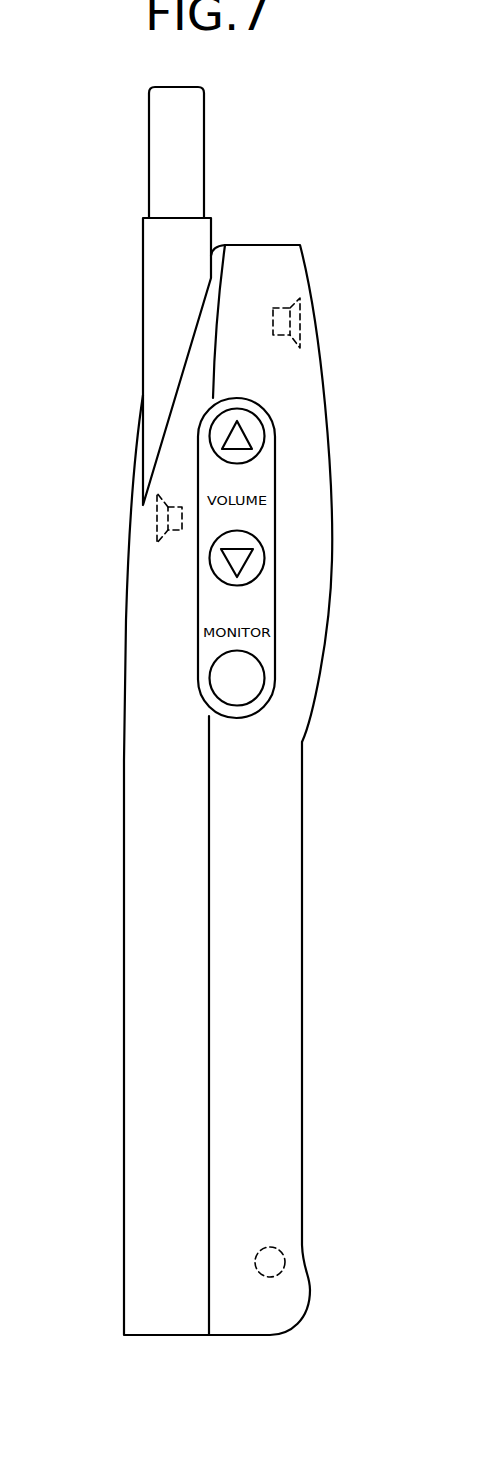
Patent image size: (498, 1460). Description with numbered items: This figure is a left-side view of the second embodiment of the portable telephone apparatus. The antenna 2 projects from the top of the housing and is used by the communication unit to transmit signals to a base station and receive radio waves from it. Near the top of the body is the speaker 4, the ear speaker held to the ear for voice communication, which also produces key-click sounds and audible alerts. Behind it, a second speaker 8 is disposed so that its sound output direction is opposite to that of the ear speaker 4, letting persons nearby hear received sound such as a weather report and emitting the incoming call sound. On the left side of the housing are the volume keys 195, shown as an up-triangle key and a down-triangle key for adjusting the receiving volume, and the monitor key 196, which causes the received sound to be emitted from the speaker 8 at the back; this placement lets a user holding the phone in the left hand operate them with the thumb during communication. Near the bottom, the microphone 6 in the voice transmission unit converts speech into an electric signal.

The antenna 2 is at (185, 150).
The speaker 4 is at (305, 323).
The speaker 8 is at (157, 525).
The volume keys 195 is at (257, 435).
The monitor key 196 is at (257, 680).
The microphone 6 is at (285, 1265).